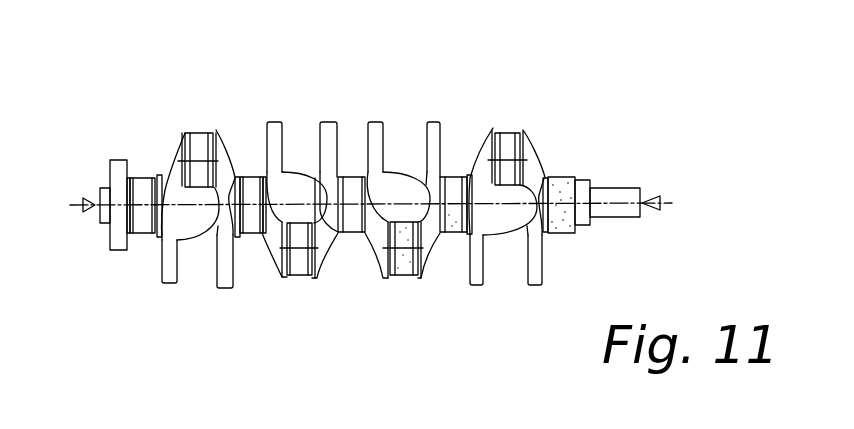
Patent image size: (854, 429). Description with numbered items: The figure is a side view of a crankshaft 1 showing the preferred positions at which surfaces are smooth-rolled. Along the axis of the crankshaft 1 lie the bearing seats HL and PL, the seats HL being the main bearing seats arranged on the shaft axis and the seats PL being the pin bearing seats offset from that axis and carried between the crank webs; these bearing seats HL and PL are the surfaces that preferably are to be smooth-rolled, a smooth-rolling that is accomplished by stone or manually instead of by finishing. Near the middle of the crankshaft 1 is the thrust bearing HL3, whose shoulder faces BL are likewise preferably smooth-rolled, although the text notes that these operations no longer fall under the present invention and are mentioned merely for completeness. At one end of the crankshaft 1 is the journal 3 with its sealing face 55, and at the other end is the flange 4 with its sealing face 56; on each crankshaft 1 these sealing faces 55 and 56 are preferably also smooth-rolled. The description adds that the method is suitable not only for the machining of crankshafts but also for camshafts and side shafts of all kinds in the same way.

The crankshaft 1 is at (377, 201).
The journal 3 is at (617, 217).
The flange 4 is at (115, 252).
The sealing face at journal 55 is at (583, 176).
The sealing face at flange 56 is at (128, 148).
The bearing seats HL is at (145, 177).
The thrust bearing HL3 is at (352, 177).
The bearing seats PL is at (198, 133).
The shoulder faces BL is at (347, 243).